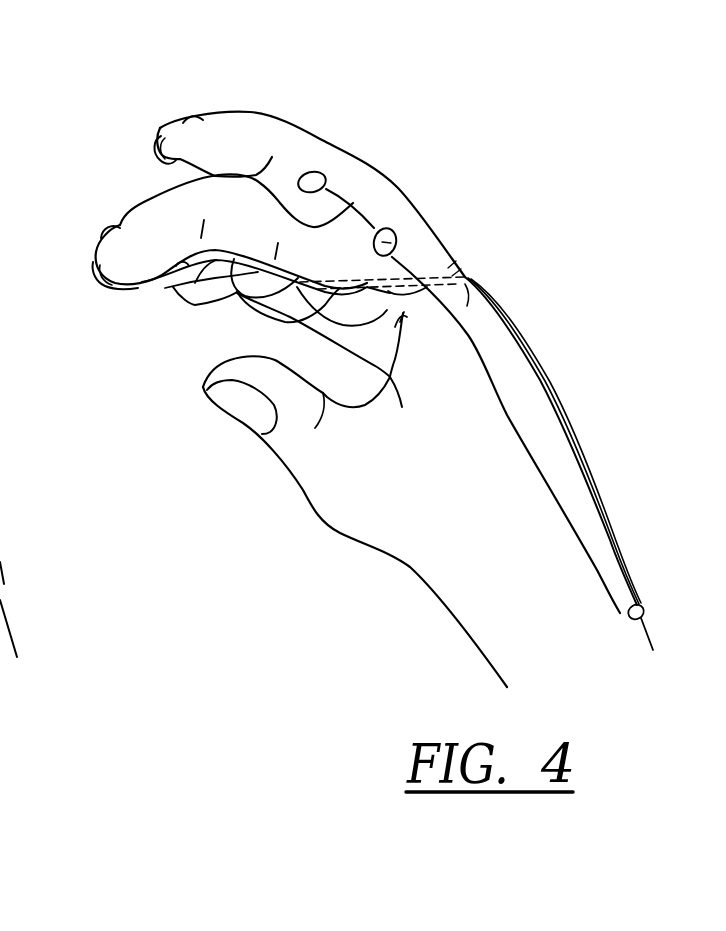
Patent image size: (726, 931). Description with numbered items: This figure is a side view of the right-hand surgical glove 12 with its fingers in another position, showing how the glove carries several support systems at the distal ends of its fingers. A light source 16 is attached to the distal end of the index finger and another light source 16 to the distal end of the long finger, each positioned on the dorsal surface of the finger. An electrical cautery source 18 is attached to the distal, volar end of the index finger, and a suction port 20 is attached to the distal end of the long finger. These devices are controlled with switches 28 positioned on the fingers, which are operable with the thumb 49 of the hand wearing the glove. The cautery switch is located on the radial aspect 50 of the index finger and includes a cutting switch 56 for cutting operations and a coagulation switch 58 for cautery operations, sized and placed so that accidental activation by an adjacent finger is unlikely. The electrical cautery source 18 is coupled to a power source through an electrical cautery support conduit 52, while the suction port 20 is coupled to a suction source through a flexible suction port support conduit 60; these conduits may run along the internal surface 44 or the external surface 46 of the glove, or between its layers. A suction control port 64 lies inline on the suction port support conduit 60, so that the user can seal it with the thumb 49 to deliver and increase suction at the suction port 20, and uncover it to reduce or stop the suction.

The surgical glove 12 is at (398, 244).
The light source 16 is at (195, 117).
The electrical cautery source 18 is at (157, 157).
The suction port 20 is at (100, 280).
The switches 28 is at (421, 144).
The internal surface 44 is at (643, 604).
The external surface 46 is at (600, 514).
The thumb 49 is at (318, 478).
The radial aspect of the finger 50 is at (307, 229).
The electrical cautery support conduit 52 is at (388, 297).
The cutting switch 56 is at (316, 176).
The coagulation switch 58 is at (397, 232).
The suction port support conduit 60 is at (231, 258).
The suction control port 64 is at (188, 266).